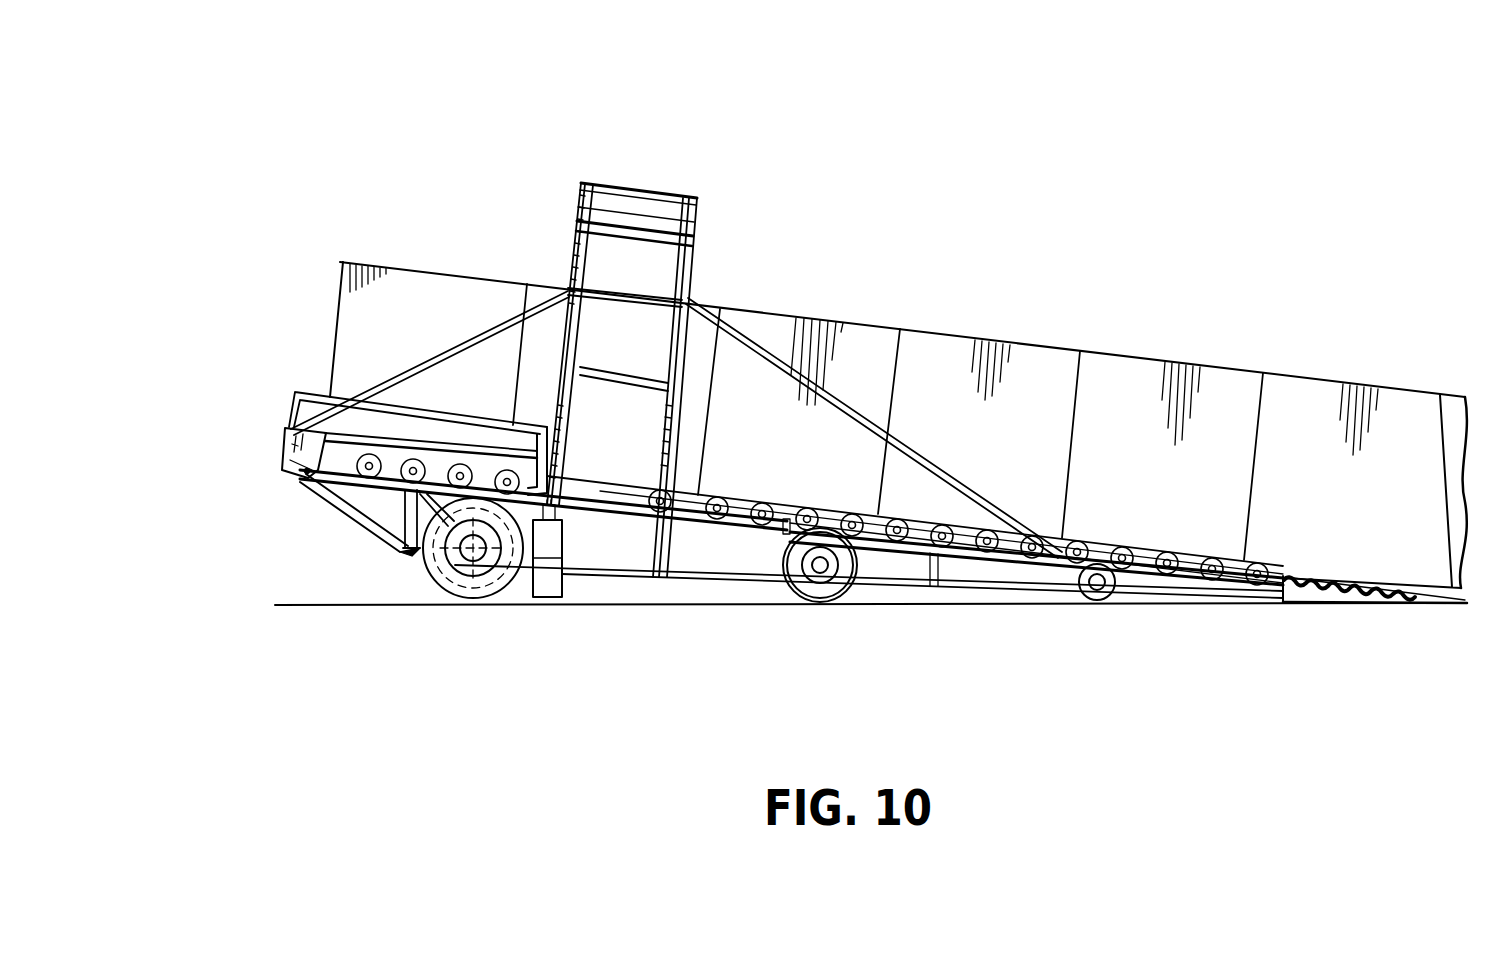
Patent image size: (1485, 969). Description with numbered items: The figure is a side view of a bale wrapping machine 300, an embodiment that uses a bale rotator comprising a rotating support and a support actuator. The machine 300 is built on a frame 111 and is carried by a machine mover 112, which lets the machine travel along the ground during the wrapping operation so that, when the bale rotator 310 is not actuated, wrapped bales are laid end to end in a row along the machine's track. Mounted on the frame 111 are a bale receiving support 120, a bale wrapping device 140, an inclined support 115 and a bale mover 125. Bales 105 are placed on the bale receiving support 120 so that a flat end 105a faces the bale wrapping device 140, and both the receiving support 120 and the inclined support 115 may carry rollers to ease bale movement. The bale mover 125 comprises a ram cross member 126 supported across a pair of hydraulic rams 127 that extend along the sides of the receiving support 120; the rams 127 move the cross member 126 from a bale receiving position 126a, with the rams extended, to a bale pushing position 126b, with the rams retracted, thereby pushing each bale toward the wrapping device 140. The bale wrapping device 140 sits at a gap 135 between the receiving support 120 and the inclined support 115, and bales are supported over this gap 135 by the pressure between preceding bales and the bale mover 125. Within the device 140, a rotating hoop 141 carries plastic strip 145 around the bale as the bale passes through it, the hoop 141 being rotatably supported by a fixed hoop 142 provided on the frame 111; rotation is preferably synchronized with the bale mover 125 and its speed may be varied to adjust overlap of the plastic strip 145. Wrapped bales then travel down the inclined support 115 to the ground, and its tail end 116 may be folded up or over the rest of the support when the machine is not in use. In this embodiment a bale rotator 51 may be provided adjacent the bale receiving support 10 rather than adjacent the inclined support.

The bale receiving support 10 is at (446, 456).
The bale rotator 51 is at (335, 560).
The bales 105 is at (402, 260).
The flat end 105a is at (520, 382).
The frame 111 is at (683, 583).
The machine mover 112 is at (453, 593).
The inclined support 115 is at (1088, 540).
The tail end 116 is at (1323, 580).
The bale receiving support 120 is at (285, 430).
The bale mover 125 is at (282, 470).
The ram cross member 126 is at (296, 393).
The bale receiving position 126a is at (290, 298).
The bale pushing position 126b is at (517, 250).
The hydraulic rams 127 is at (352, 474).
The gap 135 is at (624, 494).
The bale wrapping device 140 is at (655, 183).
The rotating hoop 141 is at (694, 258).
The fixed hoop 142 is at (583, 183).
The plastic strip 145 is at (664, 217).
The bale wrapping machine 300 is at (1085, 283).
The bale rotator 310 is at (415, 510).